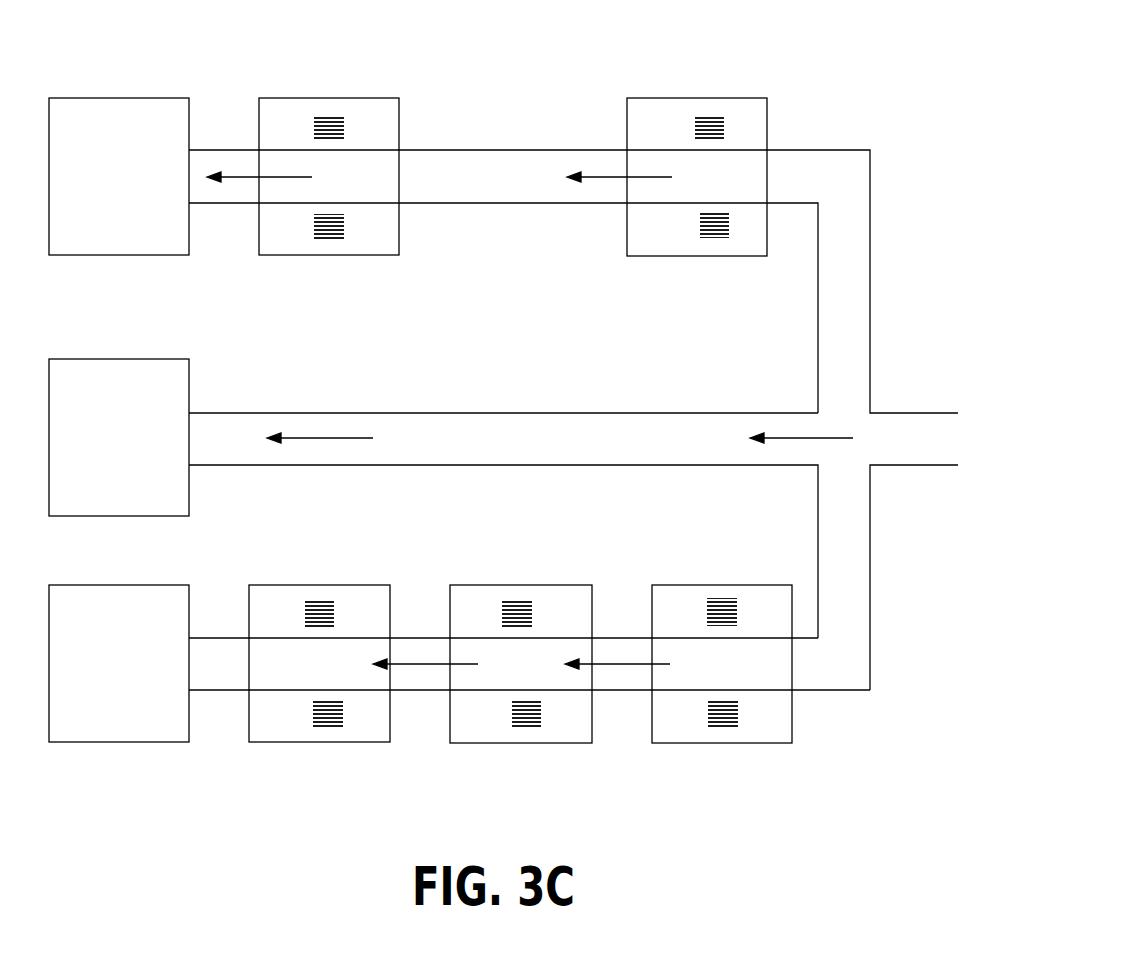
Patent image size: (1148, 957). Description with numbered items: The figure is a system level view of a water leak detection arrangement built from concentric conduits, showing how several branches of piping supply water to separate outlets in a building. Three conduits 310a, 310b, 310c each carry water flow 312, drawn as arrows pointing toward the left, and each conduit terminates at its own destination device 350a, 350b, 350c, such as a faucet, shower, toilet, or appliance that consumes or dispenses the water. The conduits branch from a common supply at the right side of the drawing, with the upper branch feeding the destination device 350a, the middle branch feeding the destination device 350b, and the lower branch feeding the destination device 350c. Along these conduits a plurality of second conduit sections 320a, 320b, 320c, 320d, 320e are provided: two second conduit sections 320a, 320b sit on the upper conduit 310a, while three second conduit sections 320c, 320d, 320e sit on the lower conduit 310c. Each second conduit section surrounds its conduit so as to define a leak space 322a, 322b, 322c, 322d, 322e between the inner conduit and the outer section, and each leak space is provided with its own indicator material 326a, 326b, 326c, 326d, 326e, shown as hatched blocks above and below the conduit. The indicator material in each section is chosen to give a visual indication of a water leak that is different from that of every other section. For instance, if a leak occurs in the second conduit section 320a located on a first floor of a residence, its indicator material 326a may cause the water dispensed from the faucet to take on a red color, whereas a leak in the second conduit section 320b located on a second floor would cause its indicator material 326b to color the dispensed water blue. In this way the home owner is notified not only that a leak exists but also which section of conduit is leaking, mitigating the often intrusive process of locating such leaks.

The conduit 310a is at (482, 147).
The conduit 310b is at (548, 412).
The conduit 310c is at (613, 636).
The water flow 312 is at (608, 180).
The second conduit section 320a is at (735, 97).
The second conduit section 320b is at (368, 97).
The second conduit section 320c is at (733, 585).
The second conduit section 320d is at (515, 585).
The second conduit section 320e is at (307, 583).
The leak space 322a is at (652, 112).
The leak space 322b is at (277, 110).
The leak space 322c is at (782, 717).
The leak space 322d is at (478, 725).
The leak space 322e is at (275, 722).
The indicator material 326a is at (713, 238).
The indicator material 326b is at (335, 238).
The indicator material 326c is at (723, 723).
The indicator material 326d is at (528, 715).
The indicator material 326e is at (332, 717).
The destination device 350a is at (119, 176).
The destination device 350b is at (119, 437).
The destination device 350c is at (119, 663).